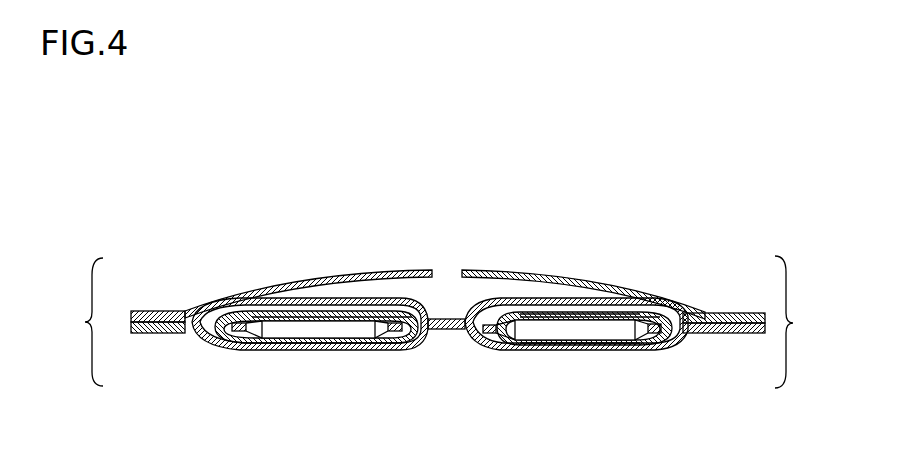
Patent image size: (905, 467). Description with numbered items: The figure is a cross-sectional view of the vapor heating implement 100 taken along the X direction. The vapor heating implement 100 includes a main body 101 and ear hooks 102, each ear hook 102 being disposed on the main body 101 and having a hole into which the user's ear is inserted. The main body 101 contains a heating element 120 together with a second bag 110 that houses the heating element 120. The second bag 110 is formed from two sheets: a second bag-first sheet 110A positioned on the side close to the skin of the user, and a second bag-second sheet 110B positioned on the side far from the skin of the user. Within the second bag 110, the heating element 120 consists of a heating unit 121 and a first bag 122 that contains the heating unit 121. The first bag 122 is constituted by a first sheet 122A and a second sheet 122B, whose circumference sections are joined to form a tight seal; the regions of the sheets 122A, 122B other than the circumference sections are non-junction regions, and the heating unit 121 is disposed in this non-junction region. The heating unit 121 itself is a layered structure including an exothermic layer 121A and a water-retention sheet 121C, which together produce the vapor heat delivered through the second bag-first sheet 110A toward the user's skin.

The vapor heating implement 100 is at (637, 124).
The main body 101 is at (449, 356).
The ear hook 102 is at (335, 275).
The second bag 110 is at (329, 294).
The second bag-first sheet 110A is at (217, 306).
The second bag-second sheet 110B is at (217, 342).
The heating element 120 is at (760, 322).
The heating unit 121 is at (365, 300).
The exothermic layer 121A is at (305, 316).
The water-retention sheet 121C is at (262, 315).
The first bag 122 is at (283, 352).
The first sheet 122A is at (612, 308).
The second sheet 122B is at (606, 352).